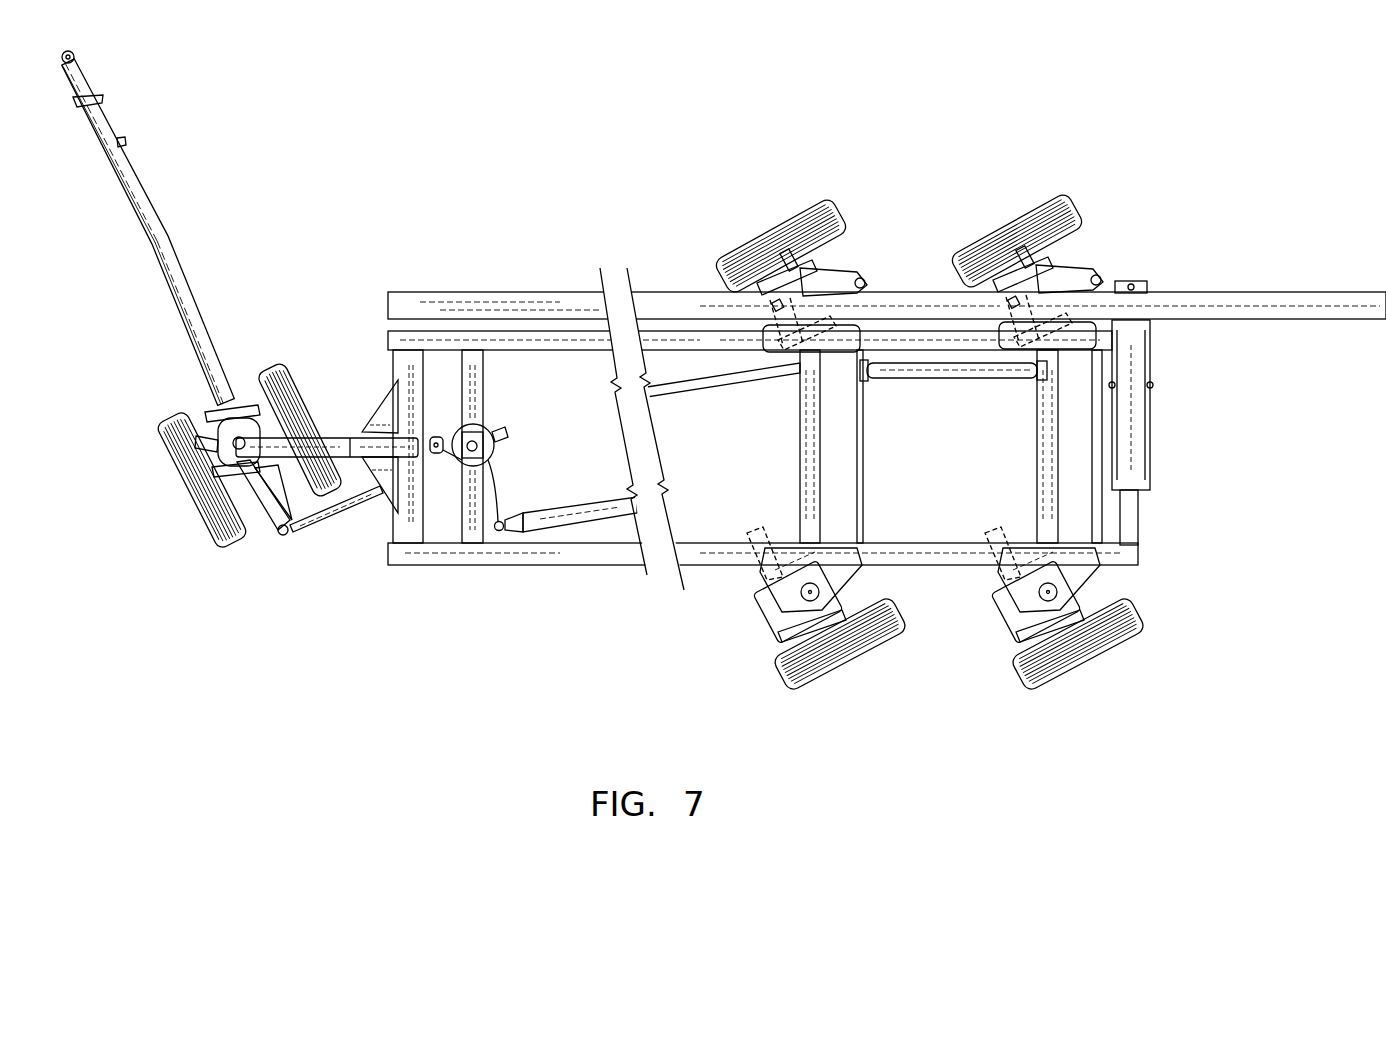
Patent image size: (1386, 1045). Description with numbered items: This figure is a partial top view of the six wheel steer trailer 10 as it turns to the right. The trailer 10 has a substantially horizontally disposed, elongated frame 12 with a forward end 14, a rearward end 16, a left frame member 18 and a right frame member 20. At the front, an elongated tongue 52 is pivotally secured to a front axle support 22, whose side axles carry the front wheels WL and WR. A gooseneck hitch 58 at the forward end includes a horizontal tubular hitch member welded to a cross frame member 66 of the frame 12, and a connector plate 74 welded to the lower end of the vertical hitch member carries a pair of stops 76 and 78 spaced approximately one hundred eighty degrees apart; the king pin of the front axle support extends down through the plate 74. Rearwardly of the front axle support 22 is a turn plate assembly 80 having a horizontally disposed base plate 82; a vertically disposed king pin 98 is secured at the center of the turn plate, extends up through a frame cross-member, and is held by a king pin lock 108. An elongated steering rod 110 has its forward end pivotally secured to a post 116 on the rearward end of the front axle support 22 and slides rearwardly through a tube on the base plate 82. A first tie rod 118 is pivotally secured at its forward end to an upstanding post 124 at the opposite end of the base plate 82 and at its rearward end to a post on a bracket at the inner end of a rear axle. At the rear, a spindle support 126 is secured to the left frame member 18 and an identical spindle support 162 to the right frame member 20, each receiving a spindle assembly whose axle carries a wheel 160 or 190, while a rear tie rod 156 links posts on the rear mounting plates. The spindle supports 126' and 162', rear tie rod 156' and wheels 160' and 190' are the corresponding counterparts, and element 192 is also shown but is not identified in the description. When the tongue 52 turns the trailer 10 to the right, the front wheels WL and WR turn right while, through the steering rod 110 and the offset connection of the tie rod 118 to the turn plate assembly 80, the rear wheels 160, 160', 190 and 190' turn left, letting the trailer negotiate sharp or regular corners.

The six wheel steer trailer 10 is at (680, 210).
The frame 12 is at (720, 567).
The forward end 14 is at (373, 378).
The rearward end 16 is at (1190, 490).
The left frame member 18 is at (585, 560).
The right frame member 20 is at (527, 335).
The front axle support 22 is at (238, 447).
The tongue 52 is at (175, 256).
The gooseneck hitch 58 is at (333, 422).
The cross frame member 66 is at (400, 540).
The connector plate 74 is at (268, 520).
The stop 76 is at (233, 400).
The stop 78 is at (250, 472).
The turn plate assembly 80 is at (517, 450).
The base plate 82 is at (500, 493).
The king pin 98 is at (458, 355).
The king pin lock 108 is at (487, 432).
The steering rod 110 is at (335, 505).
The post 116 is at (283, 535).
The first tie rod 118 is at (600, 525).
The upstanding post 124 is at (502, 532).
The spindle support 126 is at (826, 644).
The rear wheel mount bracket 126' is at (1139, 585).
The rear tie rod 156 is at (899, 446).
The frame cross post 156' is at (1163, 450).
The wheel 160 is at (875, 654).
The wheel 160' is at (1142, 647).
The spindle support 162 is at (868, 270).
The rear wheel pivot bracket 162' is at (1131, 268).
The wheel 190 is at (841, 216).
The wheel 190' is at (1064, 218).
The rear actuator 192 is at (995, 375).
The left front wheel WL is at (167, 415).
The right front wheel WR is at (277, 402).